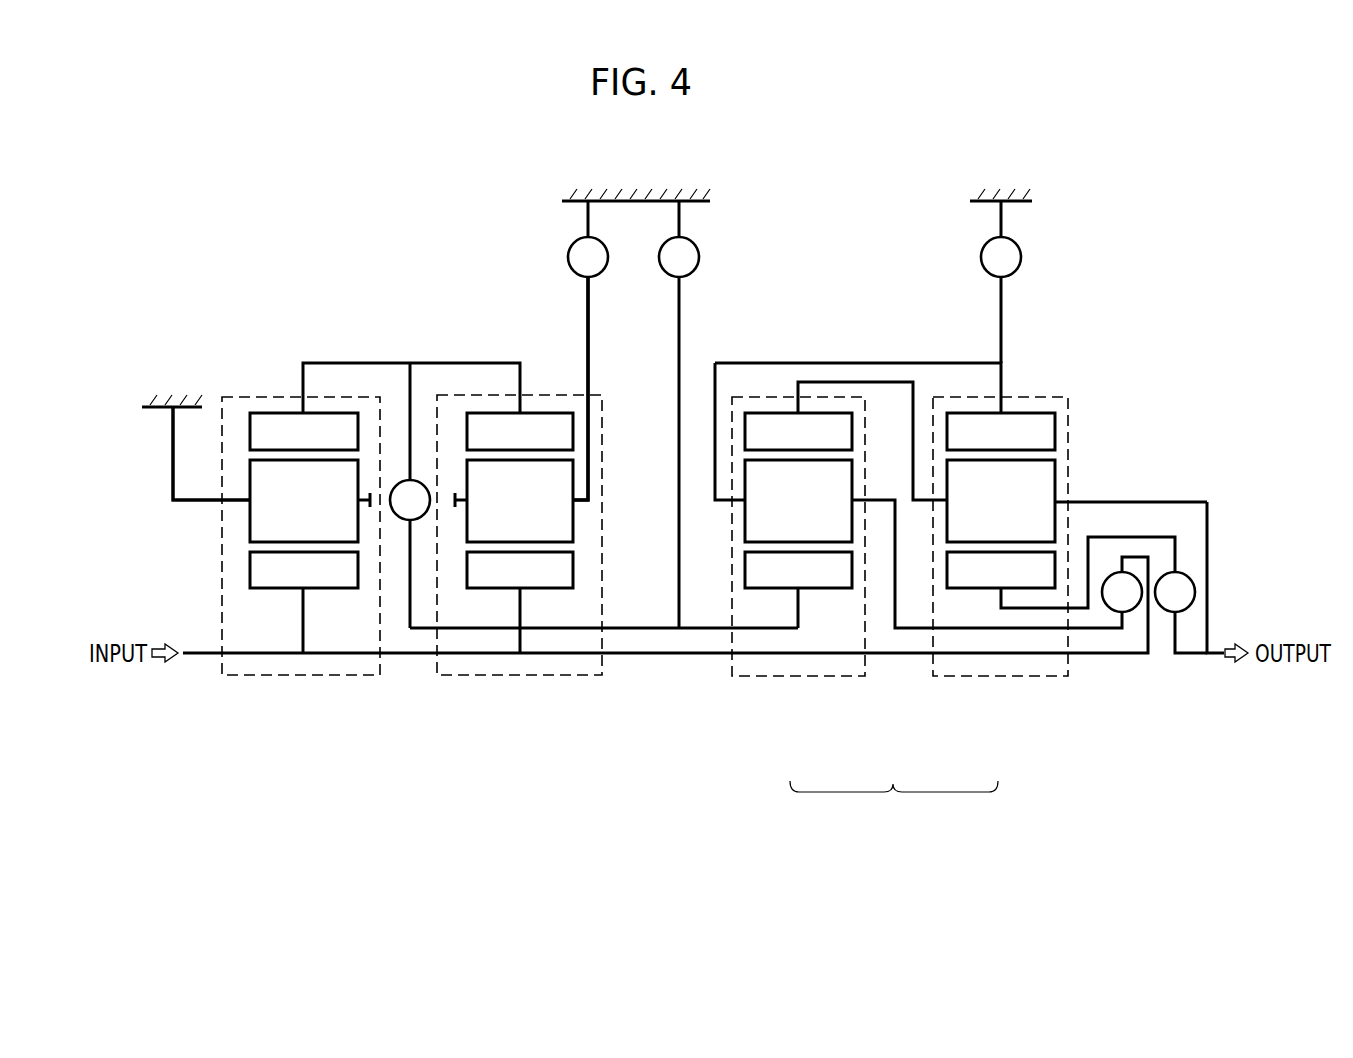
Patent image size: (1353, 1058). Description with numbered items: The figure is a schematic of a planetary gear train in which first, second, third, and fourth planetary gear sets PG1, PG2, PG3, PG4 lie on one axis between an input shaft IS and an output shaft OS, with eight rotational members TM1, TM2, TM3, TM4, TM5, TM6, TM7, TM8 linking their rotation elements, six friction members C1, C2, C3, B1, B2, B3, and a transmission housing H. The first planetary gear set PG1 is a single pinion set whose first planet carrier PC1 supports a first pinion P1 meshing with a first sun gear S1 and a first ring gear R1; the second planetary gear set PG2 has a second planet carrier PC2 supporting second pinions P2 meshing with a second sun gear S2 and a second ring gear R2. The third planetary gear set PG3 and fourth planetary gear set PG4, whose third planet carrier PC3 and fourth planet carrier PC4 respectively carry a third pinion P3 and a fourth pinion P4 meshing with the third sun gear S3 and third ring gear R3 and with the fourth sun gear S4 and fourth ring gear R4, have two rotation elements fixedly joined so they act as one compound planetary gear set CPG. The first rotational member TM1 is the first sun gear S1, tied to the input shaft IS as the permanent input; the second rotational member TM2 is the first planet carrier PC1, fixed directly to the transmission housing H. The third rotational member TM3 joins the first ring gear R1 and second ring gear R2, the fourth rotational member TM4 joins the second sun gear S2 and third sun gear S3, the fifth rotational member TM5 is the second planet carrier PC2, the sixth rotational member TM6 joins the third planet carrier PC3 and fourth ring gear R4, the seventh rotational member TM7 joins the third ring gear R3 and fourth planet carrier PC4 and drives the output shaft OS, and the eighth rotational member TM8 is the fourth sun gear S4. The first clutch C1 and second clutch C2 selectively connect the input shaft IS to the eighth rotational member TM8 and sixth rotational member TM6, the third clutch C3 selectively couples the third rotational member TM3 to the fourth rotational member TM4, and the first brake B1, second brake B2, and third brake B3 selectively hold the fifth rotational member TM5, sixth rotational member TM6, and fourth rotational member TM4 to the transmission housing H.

The transmission housing H is at (160, 400).
The first brake B1 is at (588, 350).
The second brake B2 is at (1001, 282).
The third brake B3 is at (679, 414).
The first clutch C1 is at (1181, 612).
The second clutch C2 is at (997, 564).
The third clutch C3 is at (410, 554).
The first planetary gear set PG1 is at (303, 679).
The second planetary gear set PG2 is at (519, 679).
The third planetary gear set PG3 is at (797, 679).
The fourth planetary gear set PG4 is at (1008, 679).
The compound planetary gear set CPG is at (894, 808).
The first ring gear R1 is at (304, 431).
The second ring gear R2 is at (520, 431).
The third ring gear R3 is at (798, 431).
The fourth ring gear R4 is at (1001, 431).
The first pinion P1 is at (310, 501).
The second pinions P2 is at (514, 501).
The third pinion P3 is at (798, 501).
The fourth pinion P4 is at (1001, 501).
The first sun gear S1 is at (304, 570).
The second sun gear S2 is at (520, 602).
The third sun gear S3 is at (798, 590).
The fourth sun gear S4 is at (1001, 570).
The first planet carrier PC1 is at (191, 503).
The second planet carrier PC2 is at (582, 503).
The third planet carrier PC3 is at (719, 505).
The fourth planet carrier PC4 is at (1078, 500).
The first rotational member TM1 is at (306, 618).
The second rotational member TM2 is at (200, 499).
The third rotational member TM3 is at (346, 363).
The fourth rotational member TM4 is at (632, 631).
The fifth rotational member TM5 is at (618, 437).
The sixth rotational member TM6 is at (924, 362).
The seventh rotational member TM7 is at (829, 382).
The eighth rotational member TM8 is at (1080, 611).
The input shaft IS is at (198, 659).
The output shaft OS is at (1214, 660).